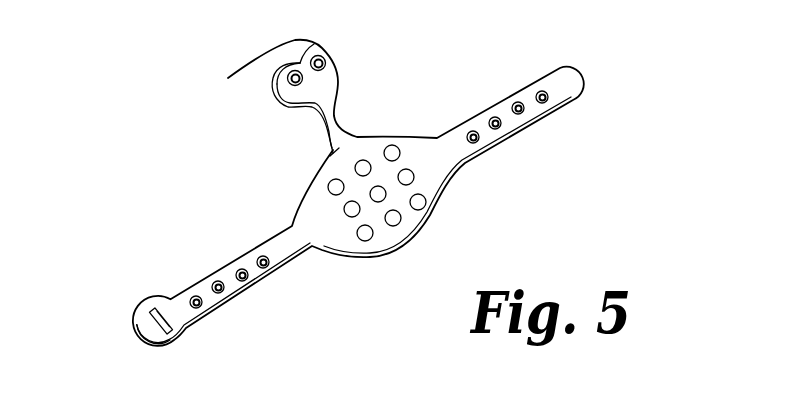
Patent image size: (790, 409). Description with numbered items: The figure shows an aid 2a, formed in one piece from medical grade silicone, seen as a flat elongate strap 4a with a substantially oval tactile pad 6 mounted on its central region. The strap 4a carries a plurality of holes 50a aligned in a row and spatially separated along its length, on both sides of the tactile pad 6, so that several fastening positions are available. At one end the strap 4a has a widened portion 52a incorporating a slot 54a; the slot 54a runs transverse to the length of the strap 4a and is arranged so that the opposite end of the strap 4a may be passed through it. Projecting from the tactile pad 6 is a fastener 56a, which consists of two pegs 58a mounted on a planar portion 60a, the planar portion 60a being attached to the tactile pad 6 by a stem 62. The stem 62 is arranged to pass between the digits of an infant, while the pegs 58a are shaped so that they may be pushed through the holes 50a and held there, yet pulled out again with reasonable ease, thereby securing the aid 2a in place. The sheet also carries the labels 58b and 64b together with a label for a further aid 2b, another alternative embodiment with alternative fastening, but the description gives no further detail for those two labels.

The aid 2a is at (630, 72).
The aid 2b is at (600, 396).
The elongate strap 4a is at (217, 222).
The tactile pad 6 is at (408, 128).
The holes 50a is at (478, 142).
The widened portion 52a is at (175, 349).
The slot 54a is at (168, 307).
The fastener 56a is at (370, 70).
The pegs 58a is at (276, 64).
The loop eyelets 58b is at (487, 408).
The planar portion 60a is at (302, 104).
The stem 62 is at (338, 147).
The extension 64b is at (385, 406).